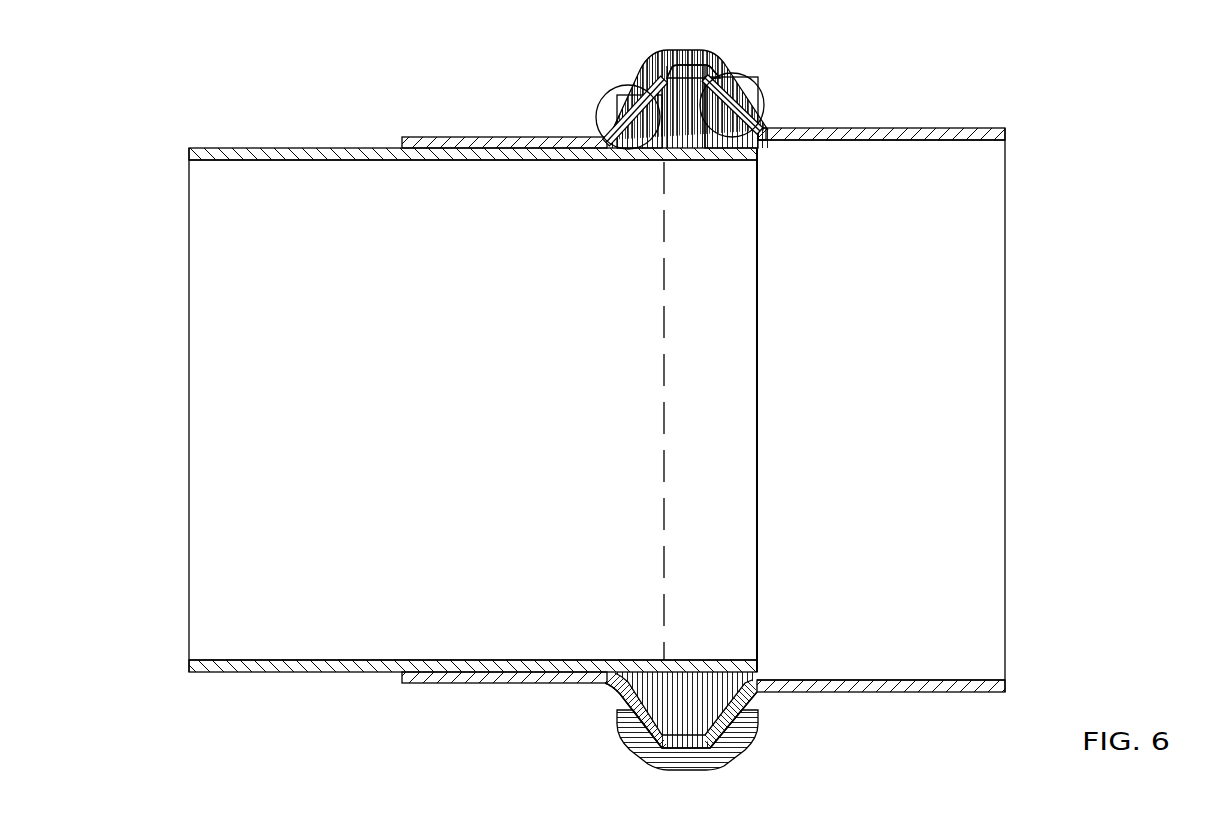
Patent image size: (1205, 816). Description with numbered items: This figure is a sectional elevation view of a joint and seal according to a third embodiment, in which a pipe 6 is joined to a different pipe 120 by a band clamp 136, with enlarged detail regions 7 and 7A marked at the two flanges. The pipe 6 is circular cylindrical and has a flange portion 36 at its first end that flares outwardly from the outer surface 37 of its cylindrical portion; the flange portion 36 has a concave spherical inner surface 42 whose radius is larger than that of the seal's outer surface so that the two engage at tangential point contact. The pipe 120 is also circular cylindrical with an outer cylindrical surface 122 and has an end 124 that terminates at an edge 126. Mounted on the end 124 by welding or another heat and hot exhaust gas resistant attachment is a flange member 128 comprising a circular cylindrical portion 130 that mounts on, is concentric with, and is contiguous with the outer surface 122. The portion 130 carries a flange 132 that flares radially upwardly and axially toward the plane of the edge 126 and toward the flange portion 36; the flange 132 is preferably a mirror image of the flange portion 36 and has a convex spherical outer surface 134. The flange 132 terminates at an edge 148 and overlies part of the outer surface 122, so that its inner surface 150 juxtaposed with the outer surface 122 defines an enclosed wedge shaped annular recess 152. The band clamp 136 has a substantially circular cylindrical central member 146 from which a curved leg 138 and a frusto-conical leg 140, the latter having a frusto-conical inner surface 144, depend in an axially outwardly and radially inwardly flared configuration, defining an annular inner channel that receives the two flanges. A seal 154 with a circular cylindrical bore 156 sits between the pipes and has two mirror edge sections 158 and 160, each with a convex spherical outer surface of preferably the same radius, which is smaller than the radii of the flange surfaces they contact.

The pipe 6 is at (881, 381).
The detail view 7 is at (764, 95).
The detail view 7A is at (608, 88).
The flange portion 36 is at (762, 126).
The outer surface 37 is at (987, 127).
The inner surface 42 is at (710, 153).
The pipe 120 is at (530, 373).
The outer cylindrical surface 122 is at (242, 147).
The end 124 is at (683, 323).
The edge 126 is at (757, 392).
The flange member 128 is at (685, 660).
The circular cylindrical portion 130 is at (460, 137).
The flange 132 is at (600, 115).
The convex spherical outer surface 134 is at (628, 85).
The band clamp 136 is at (684, 132).
The curved leg 138 is at (762, 83).
The frusto-conical leg 140 is at (643, 63).
The frusto-conical inner surface 144 is at (702, 673).
The central member 146 is at (680, 48).
The edge 148 is at (665, 455).
The inner surface 150 is at (648, 150).
The annular recess 152 is at (620, 153).
The seal 154 is at (730, 672).
The circular cylindrical bore 156 is at (640, 672).
The edge section 158 is at (760, 673).
The edge section 160 is at (627, 668).